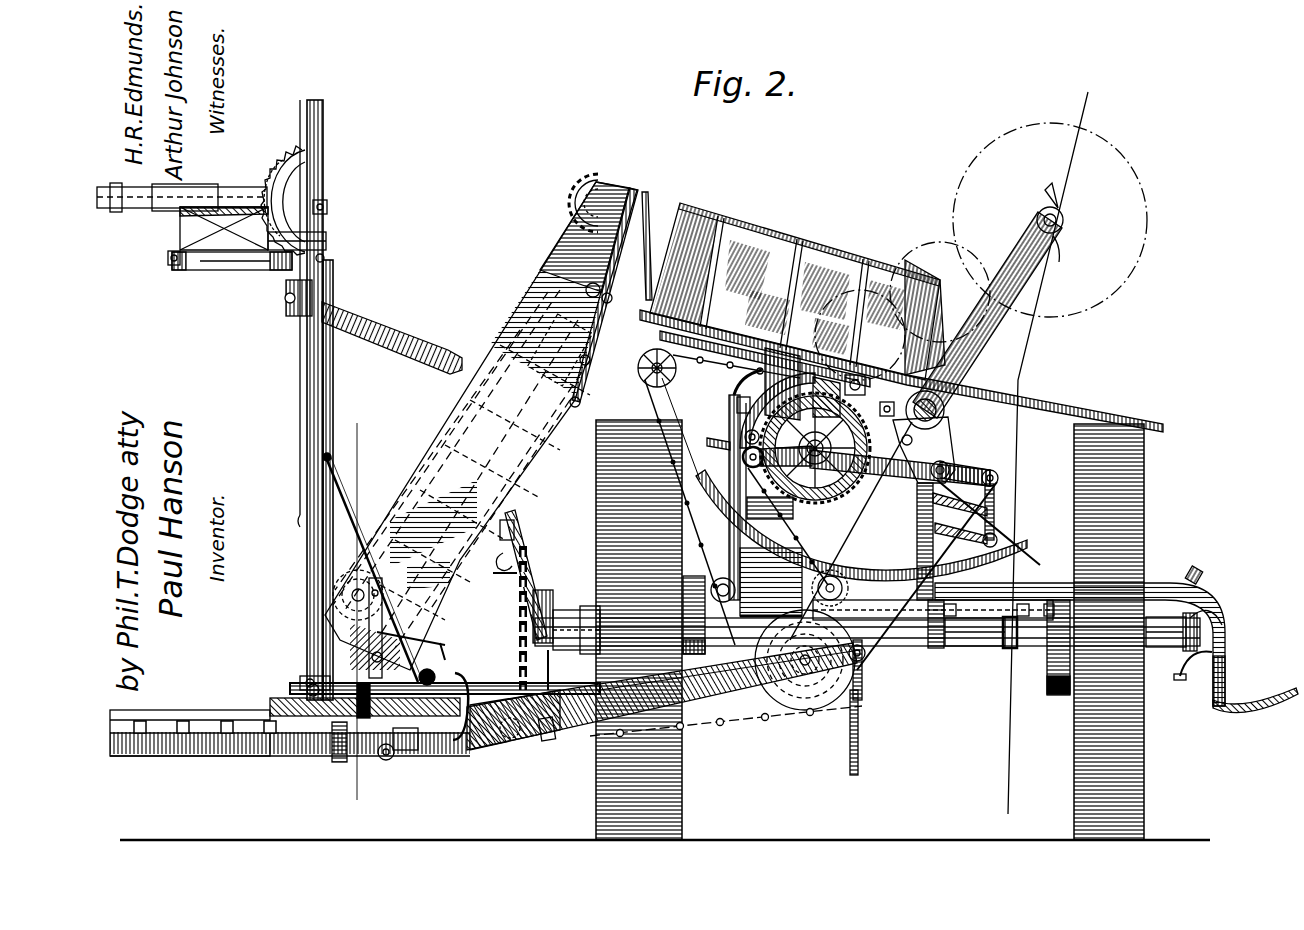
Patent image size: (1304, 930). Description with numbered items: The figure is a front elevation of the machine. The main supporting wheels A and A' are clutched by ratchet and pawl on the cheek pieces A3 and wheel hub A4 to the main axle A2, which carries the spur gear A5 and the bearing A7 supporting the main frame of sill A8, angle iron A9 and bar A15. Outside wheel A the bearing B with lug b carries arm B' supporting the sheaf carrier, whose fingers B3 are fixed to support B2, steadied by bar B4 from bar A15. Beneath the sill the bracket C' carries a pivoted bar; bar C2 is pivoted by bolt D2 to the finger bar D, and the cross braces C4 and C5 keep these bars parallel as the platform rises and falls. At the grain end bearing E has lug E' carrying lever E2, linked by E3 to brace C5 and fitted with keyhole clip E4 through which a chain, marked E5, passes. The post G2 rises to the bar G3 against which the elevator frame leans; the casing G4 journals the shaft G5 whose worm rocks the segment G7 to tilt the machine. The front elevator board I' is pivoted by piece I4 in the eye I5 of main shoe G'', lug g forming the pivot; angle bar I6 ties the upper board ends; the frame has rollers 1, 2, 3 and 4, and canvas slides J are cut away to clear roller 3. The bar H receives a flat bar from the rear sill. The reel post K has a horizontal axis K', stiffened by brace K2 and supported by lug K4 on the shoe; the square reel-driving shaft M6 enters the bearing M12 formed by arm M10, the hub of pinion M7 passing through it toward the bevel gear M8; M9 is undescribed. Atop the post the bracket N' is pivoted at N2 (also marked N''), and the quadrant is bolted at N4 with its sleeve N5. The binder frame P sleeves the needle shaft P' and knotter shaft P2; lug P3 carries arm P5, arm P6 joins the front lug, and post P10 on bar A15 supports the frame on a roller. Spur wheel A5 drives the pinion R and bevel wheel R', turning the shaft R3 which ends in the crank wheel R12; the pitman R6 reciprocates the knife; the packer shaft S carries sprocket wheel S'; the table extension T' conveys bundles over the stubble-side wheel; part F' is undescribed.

The main supporting wheel A is at (1109, 632).
The main supporting wheel A' is at (639, 630).
The main axle A2 is at (934, 650).
The cheek pieces A3 is at (690, 588).
The hub of the wheel A4 is at (700, 612).
The large gear A5 is at (853, 750).
The bearing A7 is at (972, 648).
The sill A8 is at (762, 575).
The angle iron A9 is at (1060, 610).
The bar A15 is at (1006, 648).
The bearing B is at (1179, 649).
The arm B' is at (1218, 620).
The support B2 is at (1226, 680).
The fingers B3 is at (1256, 704).
The bar B4 is at (1032, 583).
The lug b is at (1197, 582).
The bracket C' is at (726, 714).
The bar C2 is at (576, 728).
The cross brace C4 is at (548, 740).
The cross brace C5 is at (512, 740).
The finger bar D is at (290, 741).
The bolt D2 is at (470, 748).
The bearing E is at (576, 617).
The lug E' is at (552, 599).
The lever E2 is at (536, 574).
The link E3 is at (550, 668).
The clip E4 is at (512, 532).
The chain E5 is at (517, 624).
The pivot bracket F' is at (411, 764).
The post G2 is at (738, 478).
The bar G3 is at (638, 370).
The casing G4 is at (743, 457).
The shaft G5 is at (707, 440).
The segment G7 is at (740, 407).
The main shoe G'' is at (382, 767).
The lug g is at (369, 628).
The bar H is at (338, 762).
The front board I' is at (481, 426).
The pivot piece I4 is at (436, 658).
The eye I5 is at (435, 693).
The angle bar I6 is at (636, 182).
The canvas slides J is at (373, 507).
The reel post K is at (342, 480).
The axis K' is at (464, 697).
The brace K2 is at (373, 567).
The lug K4 is at (330, 686).
The reel-driving shaft M6 is at (306, 348).
The pinion M7 is at (320, 242).
The beveled gear M8 is at (300, 178).
The shaft M9 is at (175, 205).
The arm M10 is at (282, 258).
The bearing M12 is at (327, 204).
The bracket N' is at (224, 234).
The pin N'' is at (155, 261).
The pivot N2 is at (188, 268).
The bolt point N4 is at (290, 304).
The sleeve N5 is at (325, 259).
The binder frame P is at (983, 315).
The needle shaft P' is at (942, 410).
The knotter driving shaft P2 is at (1064, 221).
The lug P3 is at (950, 450).
The arm P5 is at (845, 386).
The arm P6 is at (992, 472).
The post P10 is at (924, 560).
The pinion R is at (872, 680).
The bevel wheel R' is at (844, 677).
The shaft R3 is at (800, 624).
The pitman R6 is at (706, 700).
The crank wheel R12 is at (820, 700).
The packer shaft S is at (865, 438).
The sprocket wheel S' is at (861, 525).
The extension T' is at (901, 317).
The roller 1 is at (575, 198).
The roller 2 is at (650, 245).
The roller 3 is at (1098, 88).
The roller 4 is at (375, 423).